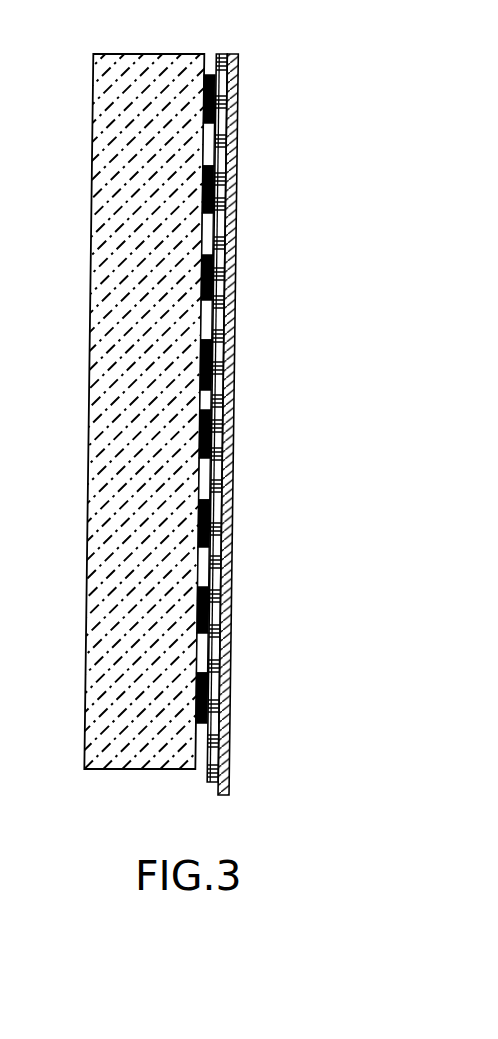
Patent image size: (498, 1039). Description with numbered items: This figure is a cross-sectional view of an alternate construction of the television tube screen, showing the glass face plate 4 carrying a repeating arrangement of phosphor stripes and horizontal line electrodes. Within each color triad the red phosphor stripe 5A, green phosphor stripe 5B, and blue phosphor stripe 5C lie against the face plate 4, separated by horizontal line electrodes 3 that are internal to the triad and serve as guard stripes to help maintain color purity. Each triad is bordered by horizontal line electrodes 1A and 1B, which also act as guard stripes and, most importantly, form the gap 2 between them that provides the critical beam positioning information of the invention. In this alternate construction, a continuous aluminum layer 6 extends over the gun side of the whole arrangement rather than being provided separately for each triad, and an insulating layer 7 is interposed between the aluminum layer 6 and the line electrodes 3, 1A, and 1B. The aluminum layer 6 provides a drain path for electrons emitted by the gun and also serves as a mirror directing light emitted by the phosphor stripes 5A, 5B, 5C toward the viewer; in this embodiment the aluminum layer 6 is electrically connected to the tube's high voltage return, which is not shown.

The horizontal line electrode 1A is at (216, 363).
The horizontal line electrode 1B is at (219, 93).
The gap 2 is at (208, 400).
The horizontal line electrode 3 is at (215, 197).
The glass face plate 4 is at (140, 252).
The red phosphor stripe 5A is at (212, 152).
The green phosphor stripe 5B is at (207, 233).
The blue phosphor stripe 5C is at (212, 327).
The aluminum layer 6 is at (240, 432).
The insulating layer 7 is at (225, 308).